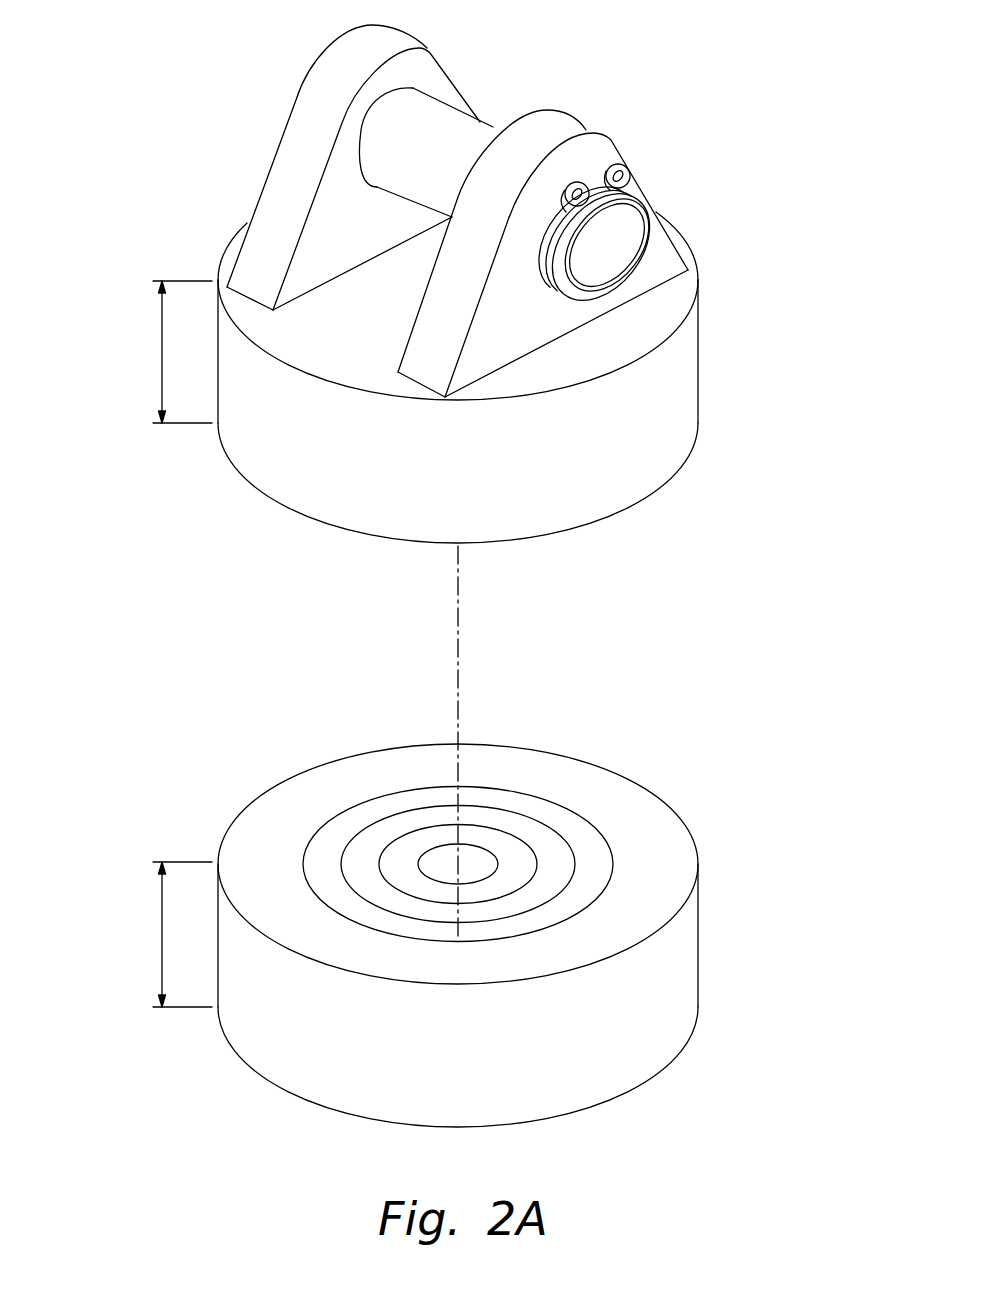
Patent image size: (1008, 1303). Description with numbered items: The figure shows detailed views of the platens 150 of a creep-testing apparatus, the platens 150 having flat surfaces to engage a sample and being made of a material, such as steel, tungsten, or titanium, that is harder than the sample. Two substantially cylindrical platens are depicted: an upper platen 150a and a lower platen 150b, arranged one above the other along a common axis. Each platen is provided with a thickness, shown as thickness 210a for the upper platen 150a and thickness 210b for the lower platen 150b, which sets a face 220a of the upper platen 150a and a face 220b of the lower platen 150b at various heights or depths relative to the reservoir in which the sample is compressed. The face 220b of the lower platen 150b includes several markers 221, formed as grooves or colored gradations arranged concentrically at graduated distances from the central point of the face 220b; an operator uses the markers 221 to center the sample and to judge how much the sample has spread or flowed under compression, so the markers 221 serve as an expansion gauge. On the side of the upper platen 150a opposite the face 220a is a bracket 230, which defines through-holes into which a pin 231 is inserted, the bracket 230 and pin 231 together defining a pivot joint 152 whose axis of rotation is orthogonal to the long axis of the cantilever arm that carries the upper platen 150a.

The platen 150 is at (753, 57).
The pivot joint 152 is at (277, 67).
The bracket 230 is at (287, 170).
The pin 231 is at (597, 267).
The upper platen 150a is at (700, 373).
The lower platen 150b is at (700, 946).
The thickness of the upper platen 210a is at (160, 350).
The thickness of the lower platen 210b is at (160, 933).
The face of the upper platen 220a is at (574, 553).
The face of the lower platen 220b is at (508, 718).
The markers 221 is at (425, 850).